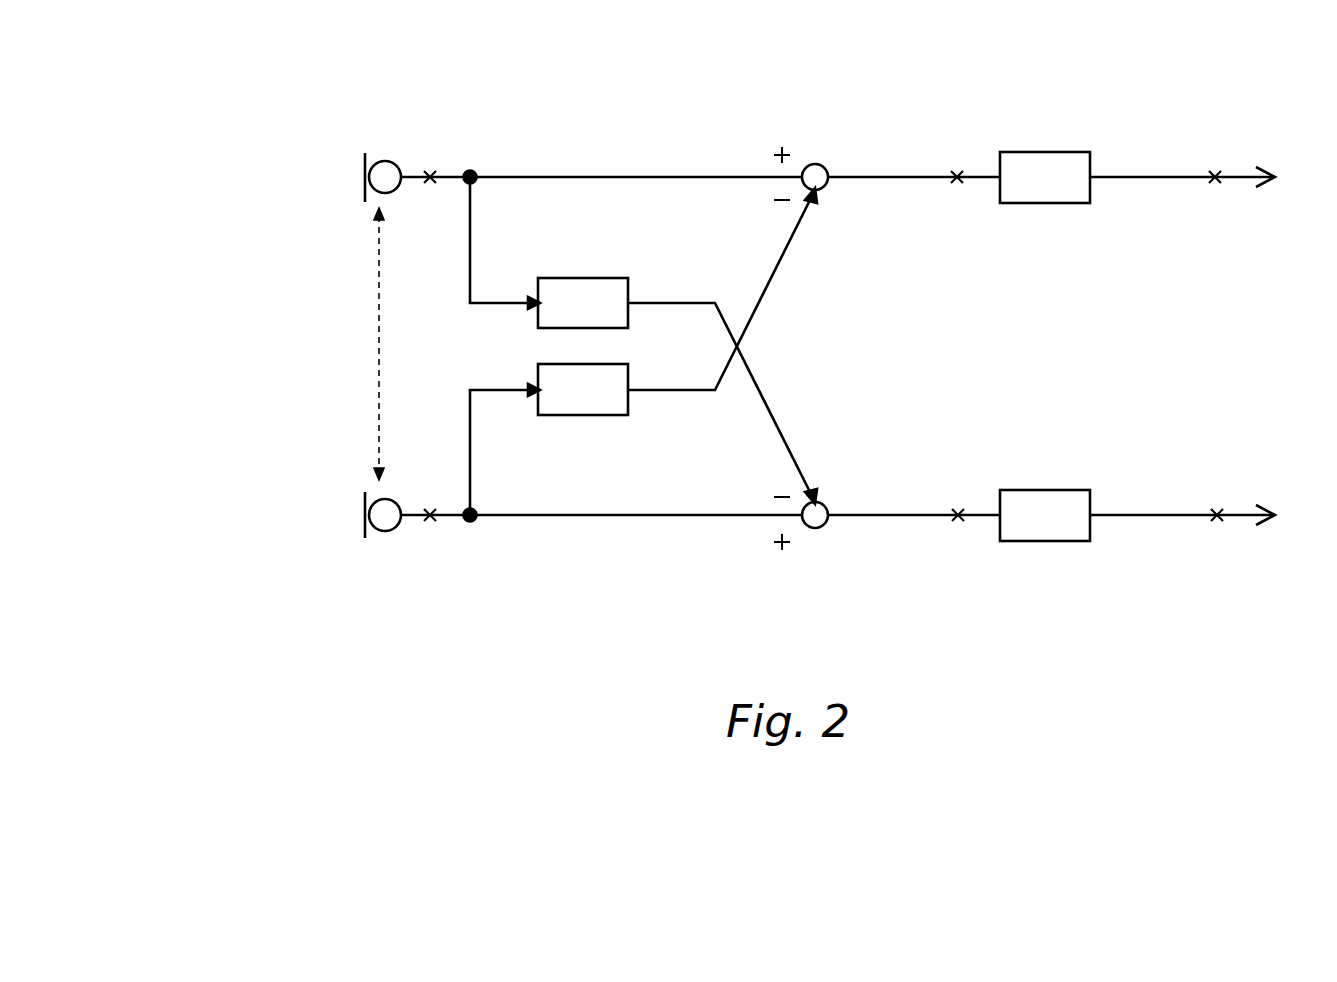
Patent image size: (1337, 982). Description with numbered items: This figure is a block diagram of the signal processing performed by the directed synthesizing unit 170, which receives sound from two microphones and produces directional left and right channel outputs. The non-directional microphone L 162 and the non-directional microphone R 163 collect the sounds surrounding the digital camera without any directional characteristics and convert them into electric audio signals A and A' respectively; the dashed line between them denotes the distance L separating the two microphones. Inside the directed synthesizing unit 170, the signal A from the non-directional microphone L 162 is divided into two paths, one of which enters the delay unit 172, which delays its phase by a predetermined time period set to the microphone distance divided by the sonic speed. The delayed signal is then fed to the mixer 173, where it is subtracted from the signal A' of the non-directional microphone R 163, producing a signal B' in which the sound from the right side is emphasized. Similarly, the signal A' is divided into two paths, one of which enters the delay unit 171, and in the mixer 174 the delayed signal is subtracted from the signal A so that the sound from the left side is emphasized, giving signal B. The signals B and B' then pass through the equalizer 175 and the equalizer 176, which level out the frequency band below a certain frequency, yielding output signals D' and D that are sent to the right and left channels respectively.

The directed synthesizing unit 170 is at (500, 40).
The non-directional microphone L 162 is at (390, 535).
The non-directional microphone R 163 is at (388, 158).
The delay unit 171 is at (585, 277).
The delay unit 172 is at (608, 415).
The mixer 173 is at (817, 165).
The mixer 174 is at (817, 527).
The equalizer 175 is at (1065, 152).
The equalizer 176 is at (1065, 490).